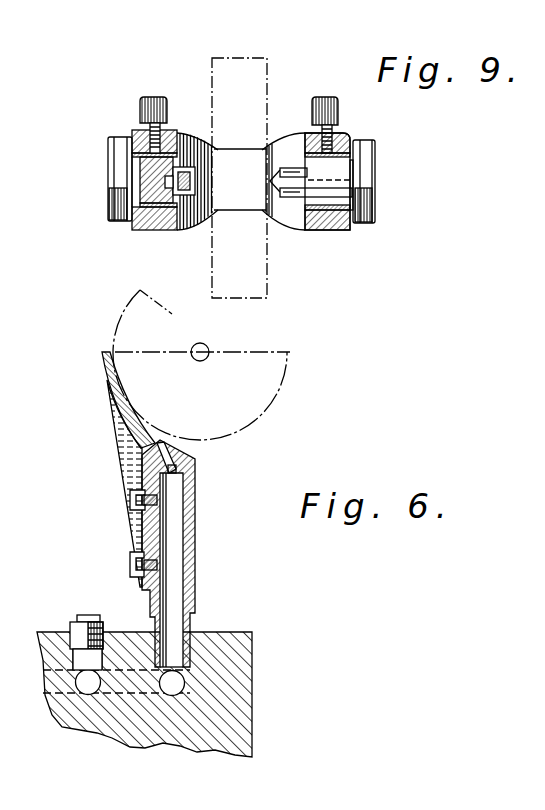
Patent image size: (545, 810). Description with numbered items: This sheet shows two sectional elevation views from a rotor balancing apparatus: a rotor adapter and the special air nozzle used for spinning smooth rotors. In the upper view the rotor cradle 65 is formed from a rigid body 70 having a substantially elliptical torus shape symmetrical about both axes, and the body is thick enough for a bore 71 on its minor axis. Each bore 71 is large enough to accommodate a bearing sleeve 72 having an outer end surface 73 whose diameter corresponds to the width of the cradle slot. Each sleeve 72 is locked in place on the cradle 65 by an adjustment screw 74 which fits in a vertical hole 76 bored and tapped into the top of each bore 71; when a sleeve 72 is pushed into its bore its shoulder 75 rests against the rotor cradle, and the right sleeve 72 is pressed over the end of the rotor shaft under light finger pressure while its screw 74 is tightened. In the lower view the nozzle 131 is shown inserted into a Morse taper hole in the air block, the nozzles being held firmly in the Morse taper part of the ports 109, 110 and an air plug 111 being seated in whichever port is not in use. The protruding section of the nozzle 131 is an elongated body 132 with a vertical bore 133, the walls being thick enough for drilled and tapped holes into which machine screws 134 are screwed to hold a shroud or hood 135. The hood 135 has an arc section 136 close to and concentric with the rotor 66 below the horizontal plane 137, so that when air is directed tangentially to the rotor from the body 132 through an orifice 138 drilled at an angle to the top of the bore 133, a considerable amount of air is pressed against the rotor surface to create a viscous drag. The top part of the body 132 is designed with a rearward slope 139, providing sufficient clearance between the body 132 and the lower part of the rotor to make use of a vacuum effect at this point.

In FIG. 9, the rotor cradle 65 is at (316, 87).
In FIG. 6, the rotor 66 is at (248, 430).
In FIG. 9, the rigid body 70 is at (278, 147).
In FIG. 9, the bore 71 is at (153, 228).
In FIG. 9, the bearing sleeve 72 is at (108, 150).
In FIG. 9, the outer end surface 73 is at (118, 225).
In FIG. 9, the adjustment screw 74 is at (140, 110).
In FIG. 9, the shoulder 75 is at (123, 184).
In FIG. 9, the vertical hole 76 is at (346, 134).
In FIG. 6, the port 109 is at (103, 678).
In FIG. 6, the port 110 is at (187, 668).
In FIG. 6, the air plug 111 is at (70, 628).
In FIG. 6, the nozzle 131 is at (104, 561).
In FIG. 6, the elongated body 132 is at (195, 563).
In FIG. 6, the vertical bore 133 is at (173, 529).
In FIG. 6, the machine screws 134 is at (138, 552).
In FIG. 6, the hood 135 is at (120, 443).
In FIG. 6, the arc section 136 is at (108, 387).
In FIG. 6, the horizontal plane 137 is at (140, 352).
In FIG. 6, the orifice 138 is at (147, 462).
In FIG. 6, the rearward slope 139 is at (188, 448).